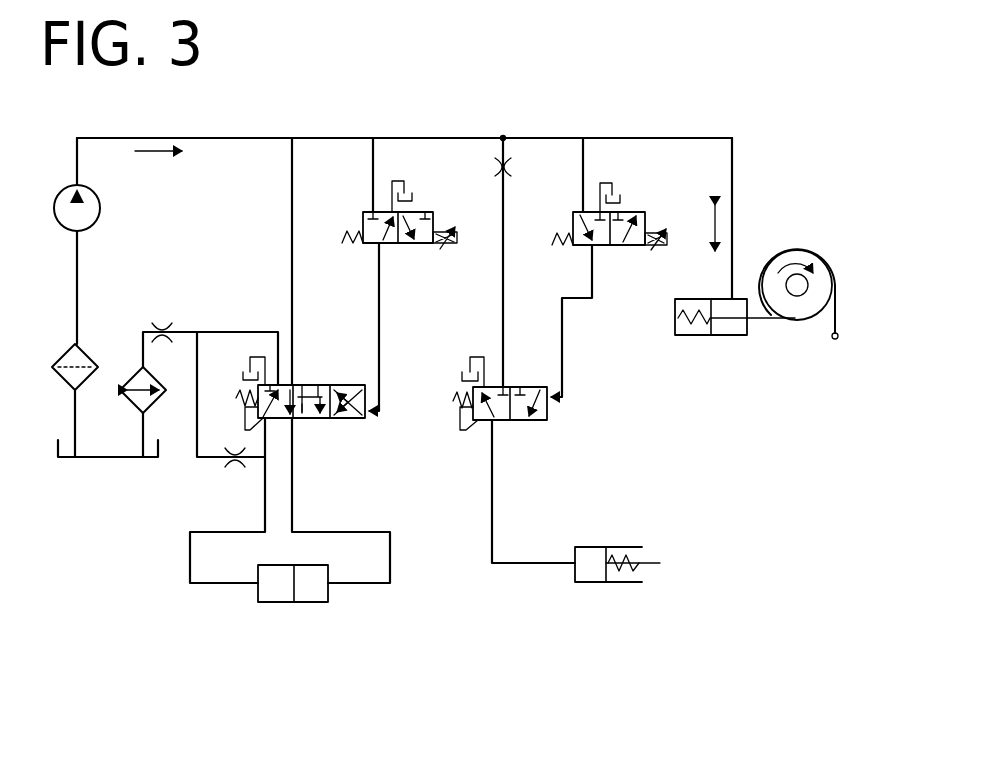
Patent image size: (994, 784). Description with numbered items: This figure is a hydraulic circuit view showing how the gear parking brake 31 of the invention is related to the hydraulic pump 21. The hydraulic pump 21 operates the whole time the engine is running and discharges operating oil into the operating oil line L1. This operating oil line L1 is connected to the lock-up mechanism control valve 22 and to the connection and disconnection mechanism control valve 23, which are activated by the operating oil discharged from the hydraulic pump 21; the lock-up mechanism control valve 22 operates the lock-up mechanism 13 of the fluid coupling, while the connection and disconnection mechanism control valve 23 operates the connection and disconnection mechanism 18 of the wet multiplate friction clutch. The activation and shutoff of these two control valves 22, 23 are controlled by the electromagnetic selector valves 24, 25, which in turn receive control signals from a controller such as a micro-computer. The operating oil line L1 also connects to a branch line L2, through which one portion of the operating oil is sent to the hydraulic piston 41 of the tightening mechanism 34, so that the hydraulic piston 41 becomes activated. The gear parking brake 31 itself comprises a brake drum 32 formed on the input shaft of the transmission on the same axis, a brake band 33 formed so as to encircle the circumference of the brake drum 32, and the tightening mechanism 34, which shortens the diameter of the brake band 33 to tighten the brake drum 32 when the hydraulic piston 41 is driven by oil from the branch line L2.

The operating oil line L1 is at (228, 138).
The branch line L2 is at (690, 138).
The lock-up mechanism 13 is at (307, 602).
The connection and disconnection mechanism 18 is at (622, 582).
The hydraulic pump 21 is at (99, 213).
The lock-up mechanism control valve 22 is at (348, 418).
The connection and disconnection mechanism control valve 23 is at (538, 420).
The electromagnetic selector valve 24 is at (428, 243).
The electromagnetic selector valve 25 is at (635, 245).
The gear parking brake 31 is at (782, 250).
The brake drum 32 is at (812, 316).
The brake band 33 is at (835, 308).
The tightening mechanism 34 is at (689, 344).
The hydraulic piston 41 is at (725, 336).